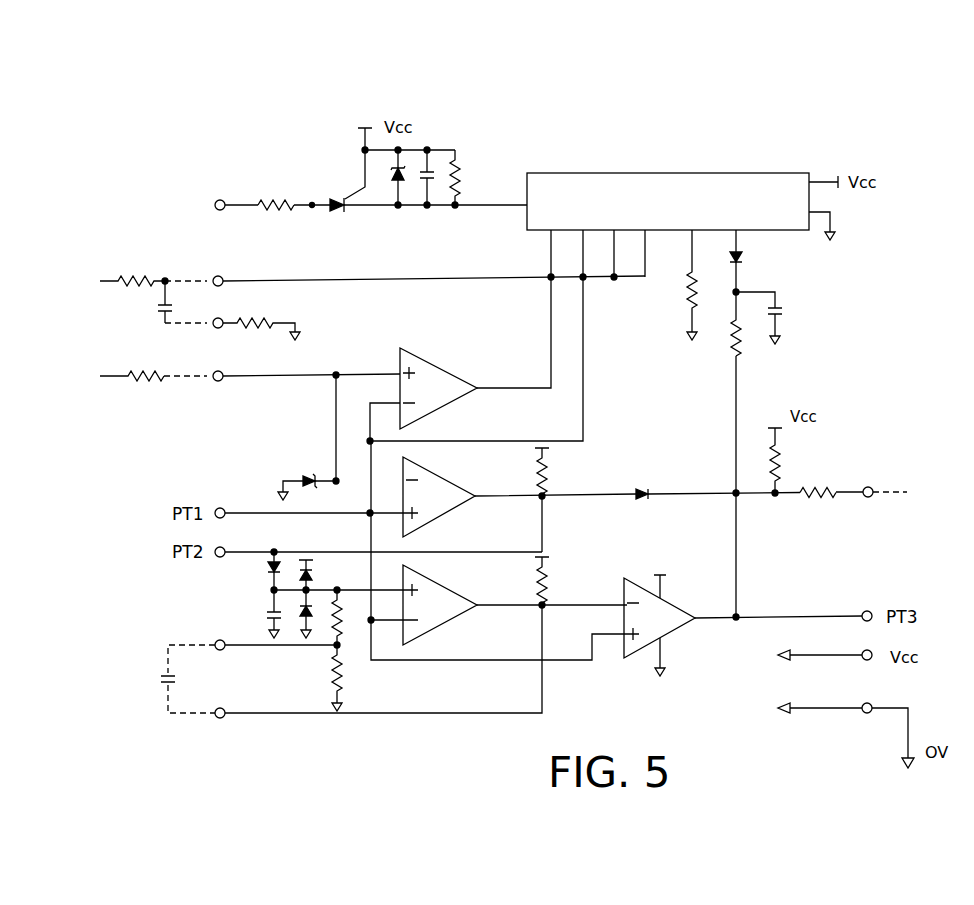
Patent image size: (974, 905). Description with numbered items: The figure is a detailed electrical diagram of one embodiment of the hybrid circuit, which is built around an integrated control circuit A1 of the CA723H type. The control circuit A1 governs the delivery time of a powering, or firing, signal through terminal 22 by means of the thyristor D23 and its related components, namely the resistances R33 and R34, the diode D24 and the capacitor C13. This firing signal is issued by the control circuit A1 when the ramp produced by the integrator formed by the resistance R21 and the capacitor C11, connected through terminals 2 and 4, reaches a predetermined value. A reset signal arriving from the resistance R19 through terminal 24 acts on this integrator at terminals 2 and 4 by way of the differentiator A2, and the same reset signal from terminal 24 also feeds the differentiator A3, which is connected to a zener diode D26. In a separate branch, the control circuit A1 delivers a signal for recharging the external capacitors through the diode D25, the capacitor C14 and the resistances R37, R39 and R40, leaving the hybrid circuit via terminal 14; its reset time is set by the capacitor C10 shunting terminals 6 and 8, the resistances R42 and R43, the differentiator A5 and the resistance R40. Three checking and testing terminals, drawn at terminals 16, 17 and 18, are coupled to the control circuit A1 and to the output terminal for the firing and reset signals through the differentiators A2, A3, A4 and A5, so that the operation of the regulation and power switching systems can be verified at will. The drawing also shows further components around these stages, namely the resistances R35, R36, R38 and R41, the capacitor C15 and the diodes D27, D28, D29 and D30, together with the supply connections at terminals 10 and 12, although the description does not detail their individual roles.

The terminal 2 is at (217, 270).
The terminal 4 is at (217, 312).
The terminal 6 is at (215, 636).
The terminal 8 is at (215, 722).
The terminal 10 (Vcc) 10 is at (862, 654).
The terminal 12 (0V) 12 is at (862, 707).
The terminal 14 is at (868, 481).
The terminal 16 (PT1) 16 is at (218, 502).
The terminal 17 (PT2) 17 is at (218, 541).
The terminal 18 (PT3) 18 is at (862, 615).
The terminal 22 is at (201, 206).
The terminal 24 is at (221, 364).
The control circuit A1 is at (765, 172).
The differentiator A2 is at (438, 388).
The differentiator A3 is at (439, 497).
The differentiator A4 is at (440, 605).
The differentiator A5 is at (662, 622).
The resistance R19 is at (132, 365).
The resistance R21 is at (132, 269).
The resistance R33 is at (276, 216).
The resistance R34 is at (471, 177).
The resistor R35 is at (261, 318).
The resistor R36 is at (671, 285).
The resistance R37 is at (736, 336).
The resistor R38 is at (558, 469).
The resistance R39 is at (794, 460).
The resistance R40 is at (816, 504).
The resistor R41 is at (558, 578).
The resistance R42 is at (352, 617).
The resistance R43 is at (354, 678).
The capacitor C10 is at (188, 679).
The capacitor C11 is at (145, 302).
The capacitor C13 is at (430, 172).
The capacitor C14 is at (779, 318).
The capacitor C15 is at (254, 614).
The thyristor D23 is at (348, 215).
The diode D24 is at (387, 177).
The diode D25 is at (756, 261).
The zener diode D26 is at (307, 477).
The diode D27 is at (256, 571).
The zener diode D28 is at (326, 572).
The diode D29 is at (322, 610).
The diode D30 is at (654, 483).